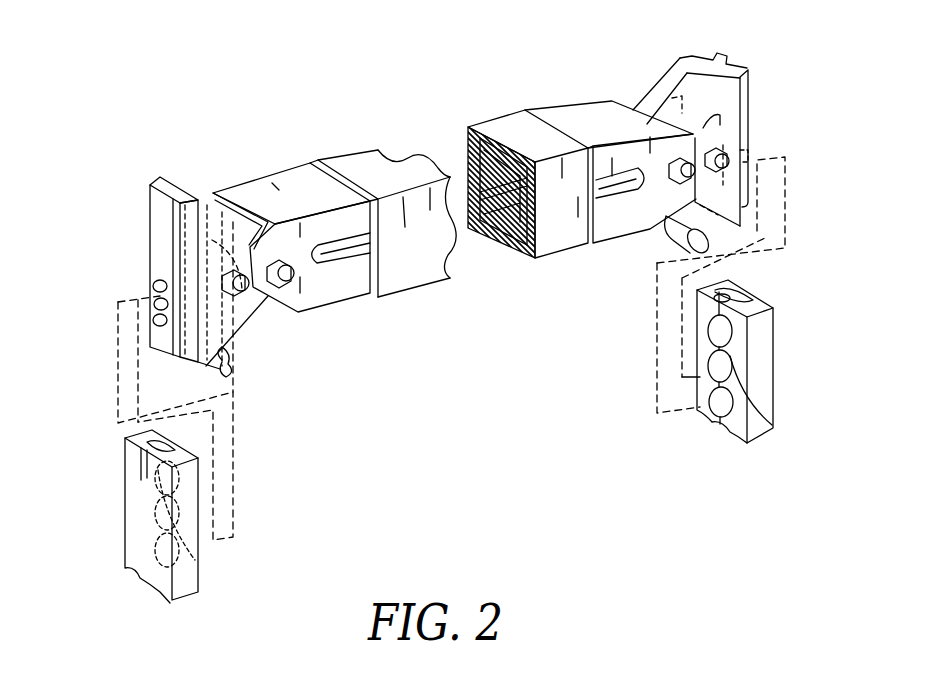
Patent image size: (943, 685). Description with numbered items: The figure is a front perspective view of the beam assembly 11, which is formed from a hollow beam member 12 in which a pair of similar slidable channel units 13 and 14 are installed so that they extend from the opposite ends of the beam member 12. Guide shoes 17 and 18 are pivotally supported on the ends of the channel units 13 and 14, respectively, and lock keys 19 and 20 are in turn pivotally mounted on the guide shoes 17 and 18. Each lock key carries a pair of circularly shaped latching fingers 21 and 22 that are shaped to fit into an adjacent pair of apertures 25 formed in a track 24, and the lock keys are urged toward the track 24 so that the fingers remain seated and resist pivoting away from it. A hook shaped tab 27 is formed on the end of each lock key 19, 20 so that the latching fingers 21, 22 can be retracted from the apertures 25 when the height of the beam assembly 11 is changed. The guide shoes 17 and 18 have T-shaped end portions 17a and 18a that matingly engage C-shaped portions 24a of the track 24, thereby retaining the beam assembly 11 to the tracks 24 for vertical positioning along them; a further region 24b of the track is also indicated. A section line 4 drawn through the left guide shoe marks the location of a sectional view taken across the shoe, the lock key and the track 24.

The section line 4- 4 is at (170, 185).
The beam assembly 11 is at (408, 149).
The hollow beam member 12 is at (392, 297).
The slidable channel unit 13 is at (286, 178).
The slidable channel unit 14 is at (612, 237).
The guide shoe 17 is at (212, 193).
The T-shaped end portion 17a is at (158, 228).
The guide shoe 18 is at (695, 60).
The T-shaped end portion 18a is at (727, 58).
The lock key 19 is at (240, 300).
The lock key 20 is at (708, 181).
The latching finger 21 is at (153, 286).
The latching finger 22 is at (158, 335).
The track 24 is at (196, 568).
The C-shaped portion 24a is at (126, 440).
The recess 24b is at (710, 402).
The aperture 25 is at (158, 485).
The hook shaped tab 27 is at (232, 365).